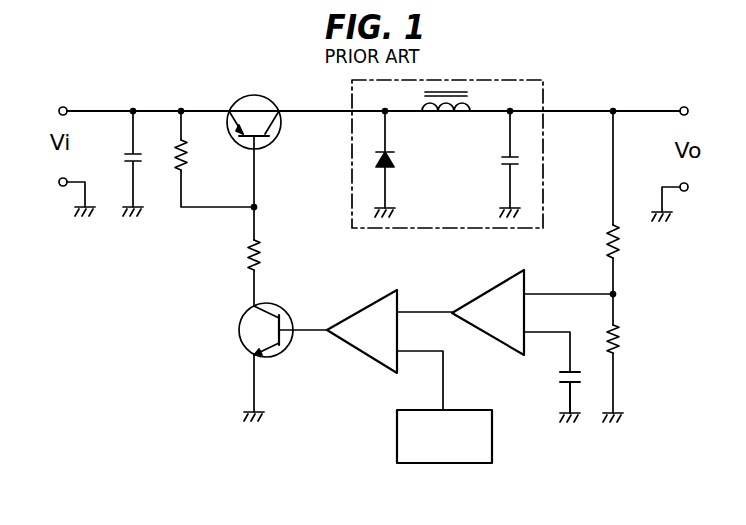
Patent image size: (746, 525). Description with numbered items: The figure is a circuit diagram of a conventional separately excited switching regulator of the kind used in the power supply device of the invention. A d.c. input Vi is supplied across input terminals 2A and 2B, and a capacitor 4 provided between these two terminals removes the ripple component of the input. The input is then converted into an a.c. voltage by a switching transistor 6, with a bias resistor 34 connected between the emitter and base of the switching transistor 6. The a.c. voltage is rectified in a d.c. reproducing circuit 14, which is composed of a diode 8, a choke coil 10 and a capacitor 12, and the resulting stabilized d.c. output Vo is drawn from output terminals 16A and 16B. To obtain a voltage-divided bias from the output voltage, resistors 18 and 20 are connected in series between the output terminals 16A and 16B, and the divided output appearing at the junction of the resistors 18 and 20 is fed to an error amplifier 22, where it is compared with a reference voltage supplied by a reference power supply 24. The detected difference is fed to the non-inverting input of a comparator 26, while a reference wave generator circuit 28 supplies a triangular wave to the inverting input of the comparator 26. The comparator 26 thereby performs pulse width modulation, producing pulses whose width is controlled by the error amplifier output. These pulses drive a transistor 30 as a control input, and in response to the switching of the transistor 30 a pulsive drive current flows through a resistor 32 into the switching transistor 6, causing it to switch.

The input terminal 2A is at (63, 106).
The input terminal 2B is at (58, 182).
The capacitor 4 is at (124, 163).
The switching transistor 6 is at (254, 95).
The diode 8 is at (393, 164).
The choke coil 10 is at (447, 120).
The capacitor 12 is at (497, 164).
The d.c. reproducing circuit 14 is at (517, 74).
The output terminal 16A is at (684, 107).
The output terminal 16B is at (688, 187).
The resistor 18 is at (626, 218).
The resistor 20 is at (625, 373).
The error amplifier 22 is at (478, 299).
The reference power supply 24 is at (552, 395).
The comparator 26 is at (358, 356).
The reference wave generator circuit 28 is at (397, 442).
The transistor 30 is at (239, 330).
The resistor 32 is at (268, 273).
The bias resistor 34 is at (214, 159).